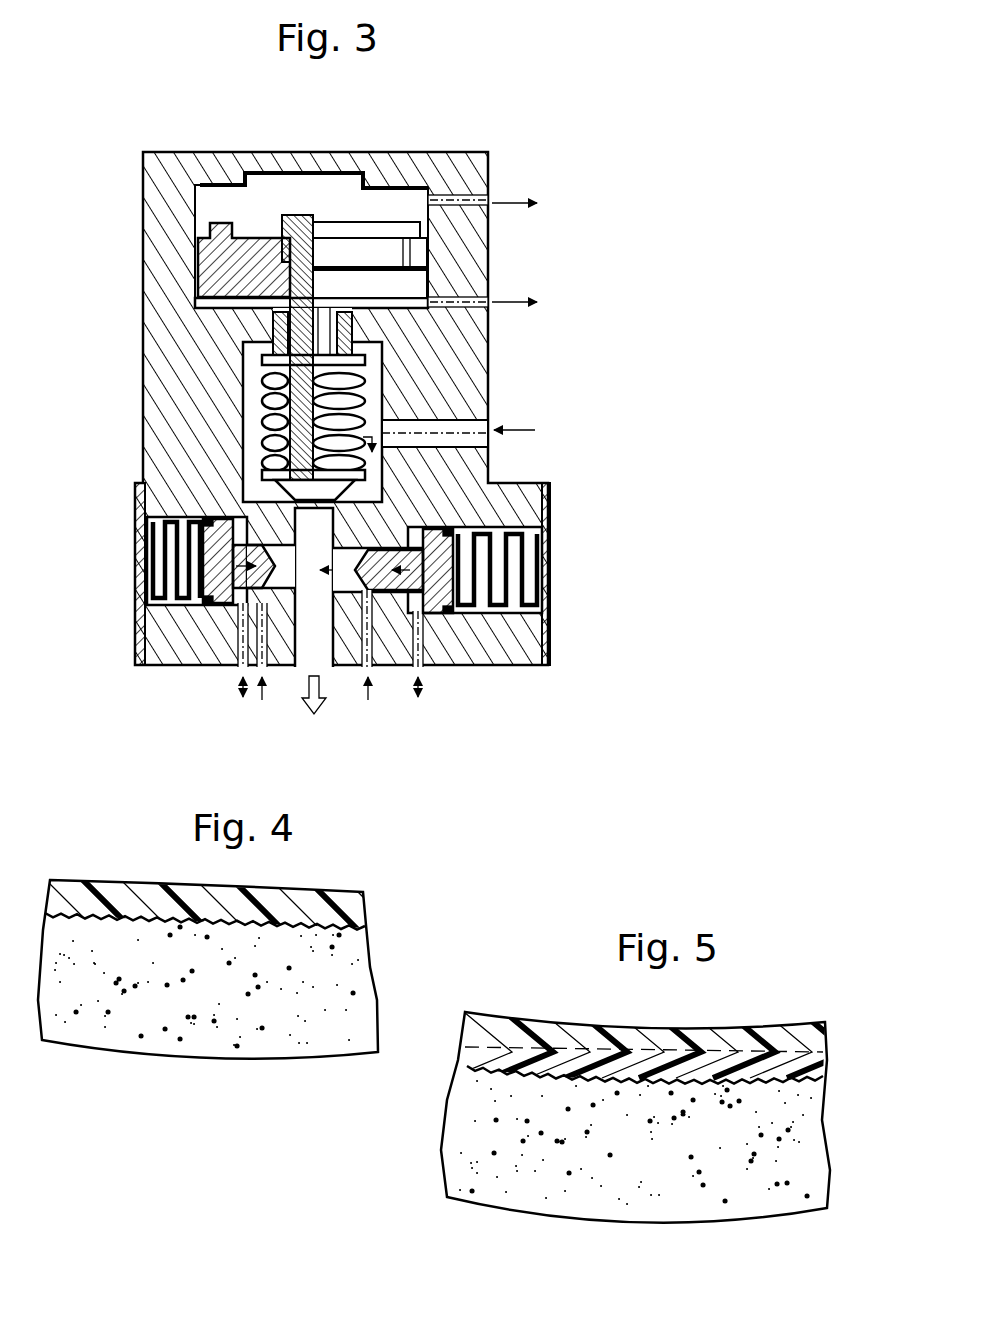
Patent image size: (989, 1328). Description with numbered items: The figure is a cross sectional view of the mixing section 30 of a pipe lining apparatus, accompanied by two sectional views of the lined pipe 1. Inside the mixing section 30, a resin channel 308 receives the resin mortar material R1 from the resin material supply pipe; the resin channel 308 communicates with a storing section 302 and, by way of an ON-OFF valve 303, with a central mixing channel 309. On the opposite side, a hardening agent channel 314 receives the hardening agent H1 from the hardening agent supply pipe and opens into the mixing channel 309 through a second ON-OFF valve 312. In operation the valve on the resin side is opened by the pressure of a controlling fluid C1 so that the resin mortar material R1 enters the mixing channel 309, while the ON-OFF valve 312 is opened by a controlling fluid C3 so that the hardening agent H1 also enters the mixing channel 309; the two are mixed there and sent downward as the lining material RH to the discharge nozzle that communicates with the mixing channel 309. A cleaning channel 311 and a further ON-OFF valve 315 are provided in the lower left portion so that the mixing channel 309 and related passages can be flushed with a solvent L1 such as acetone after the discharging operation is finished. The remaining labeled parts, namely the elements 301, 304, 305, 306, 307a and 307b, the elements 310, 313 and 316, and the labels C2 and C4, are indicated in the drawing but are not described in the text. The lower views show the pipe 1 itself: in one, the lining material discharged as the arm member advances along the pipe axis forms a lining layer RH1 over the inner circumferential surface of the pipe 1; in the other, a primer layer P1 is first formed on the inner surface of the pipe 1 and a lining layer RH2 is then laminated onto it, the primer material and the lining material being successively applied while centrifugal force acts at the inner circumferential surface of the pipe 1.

In FIG. 3, the mixing section 30 is at (581, 127).
In FIG. 3, the valve body 301 is at (470, 363).
In FIG. 3, the storing section 302 is at (263, 447).
In FIG. 3, the ON-OFF valve 303 is at (253, 483).
In FIG. 3, the spring seat 304 is at (287, 367).
In FIG. 3, the piston 305 is at (229, 238).
In FIG. 3, the guide sleeve 306 is at (273, 317).
In FIG. 3, the upper housing portion 307a is at (460, 197).
In FIG. 3, the lower housing portion 307b is at (462, 290).
In FIG. 3, the resin channel 308 is at (448, 420).
In FIG. 3, the mixing channel 309 is at (242, 648).
In FIG. 3, the right plug 310 is at (465, 652).
In FIG. 3, the cleaning channel 311 is at (183, 663).
In FIG. 3, the ON-OFF valve 312 is at (455, 530).
In FIG. 3, the right spring 313 is at (520, 572).
In FIG. 3, the hardening agent channel 314 is at (423, 643).
In FIG. 3, the ON-OFF valve 315 is at (215, 545).
In FIG. 3, the left spring 316 is at (160, 582).
In FIG. 3, the controlling fluid C1 is at (501, 304).
In FIG. 3, the control pressure port C2 is at (501, 205).
In FIG. 3, the controlling fluid C3 is at (420, 671).
In FIG. 3, the control pressure port C4 is at (238, 667).
In FIG. 3, the resin mortar material R1 is at (530, 432).
In FIG. 3, the solvent L1 is at (269, 667).
In FIG. 3, the hardening agent H1 is at (371, 661).
In FIG. 3, the lining material RH is at (317, 631).
In FIG. 4, the lining layer RH1 is at (155, 905).
In FIG. 5, the lining layer RH2 is at (540, 1030).
In FIG. 5, the primer layer P1 is at (808, 1060).
In FIG. 4, the pipe 1 is at (345, 991).
In FIG. 5, the pipe 1 is at (667, 1200).